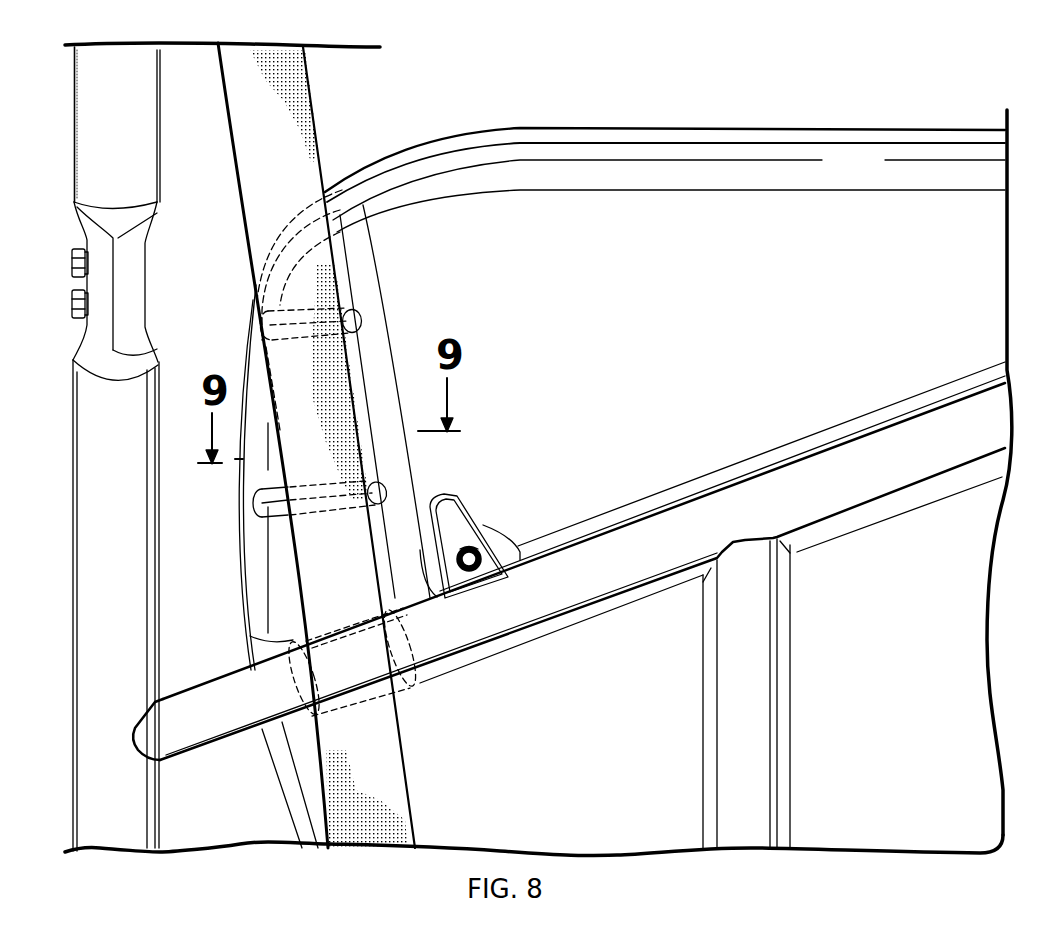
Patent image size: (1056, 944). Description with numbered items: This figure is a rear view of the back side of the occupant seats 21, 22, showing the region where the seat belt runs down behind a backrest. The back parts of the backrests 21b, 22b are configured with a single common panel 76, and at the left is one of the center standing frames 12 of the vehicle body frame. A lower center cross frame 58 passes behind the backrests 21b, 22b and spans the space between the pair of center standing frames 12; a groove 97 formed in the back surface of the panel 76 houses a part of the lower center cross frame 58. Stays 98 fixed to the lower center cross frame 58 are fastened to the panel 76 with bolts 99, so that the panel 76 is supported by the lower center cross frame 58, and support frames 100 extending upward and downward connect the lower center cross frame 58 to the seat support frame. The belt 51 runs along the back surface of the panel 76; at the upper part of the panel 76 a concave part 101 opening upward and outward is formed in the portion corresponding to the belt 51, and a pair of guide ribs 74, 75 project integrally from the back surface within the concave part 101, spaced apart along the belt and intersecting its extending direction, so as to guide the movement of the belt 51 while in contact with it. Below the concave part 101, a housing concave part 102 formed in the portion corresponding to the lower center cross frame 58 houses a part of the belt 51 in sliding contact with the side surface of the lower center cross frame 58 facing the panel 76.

The center standing frame 12 is at (88, 588).
The occupant seat 21 is at (631, 240).
The occupant seat 22 is at (573, 125).
The backrest 21b is at (666, 142).
The backrest 22b is at (715, 137).
The panel 76 is at (867, 172).
The belt 51 is at (328, 292).
The guide rib 75 is at (362, 319).
The guide rib 74 is at (375, 491).
The concave part 101 is at (280, 577).
The lower center cross frame 58 is at (775, 492).
The groove 97 is at (602, 540).
The stay 98 is at (458, 520).
The bolt 99 is at (470, 571).
The support frame 100 is at (772, 693).
The housing concave part 102 is at (307, 718).